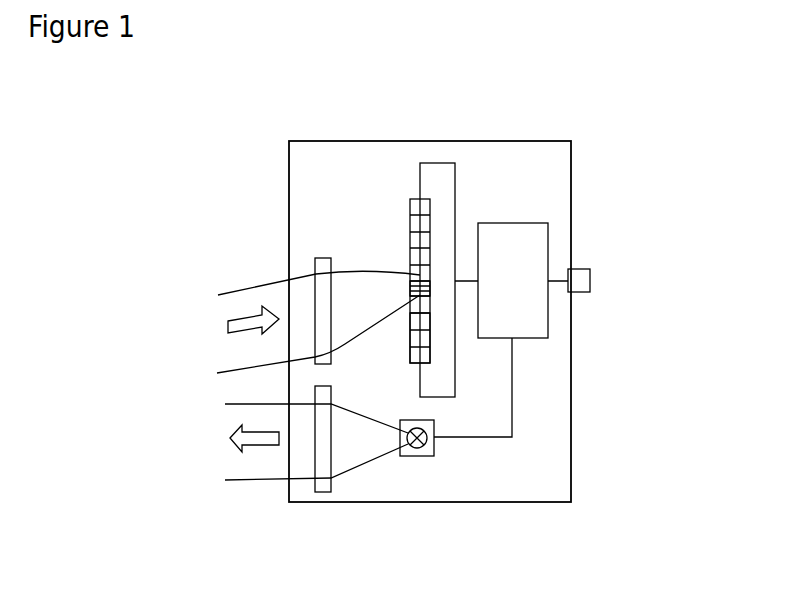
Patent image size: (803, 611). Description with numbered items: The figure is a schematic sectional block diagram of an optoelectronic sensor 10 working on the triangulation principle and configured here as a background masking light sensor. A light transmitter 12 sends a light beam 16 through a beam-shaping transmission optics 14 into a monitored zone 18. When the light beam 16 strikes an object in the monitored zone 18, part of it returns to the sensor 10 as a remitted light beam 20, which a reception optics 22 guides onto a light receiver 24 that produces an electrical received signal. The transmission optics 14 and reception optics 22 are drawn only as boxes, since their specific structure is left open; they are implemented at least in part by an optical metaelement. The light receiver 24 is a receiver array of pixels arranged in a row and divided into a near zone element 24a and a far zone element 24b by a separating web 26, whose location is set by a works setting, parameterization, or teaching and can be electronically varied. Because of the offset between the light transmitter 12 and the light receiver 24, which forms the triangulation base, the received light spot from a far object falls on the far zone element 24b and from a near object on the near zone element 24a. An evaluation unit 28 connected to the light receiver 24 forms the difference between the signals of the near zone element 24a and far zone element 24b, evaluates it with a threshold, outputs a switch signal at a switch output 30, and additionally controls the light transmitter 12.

The optoelectronic sensor 10 is at (413, 131).
The light transmitter 12 is at (425, 446).
The transmission optics 14 is at (328, 490).
The light beam 16 is at (267, 465).
The monitored zone 18 is at (145, 176).
The remitted light beam 20 is at (242, 290).
The reception optics 22 is at (320, 302).
The light receiver 24 is at (412, 199).
The near zone element 24a is at (410, 225).
The far zone element 24b is at (410, 334).
The separating web 26 is at (429, 288).
The evaluation unit 28 is at (535, 308).
The switch output 30 is at (583, 278).